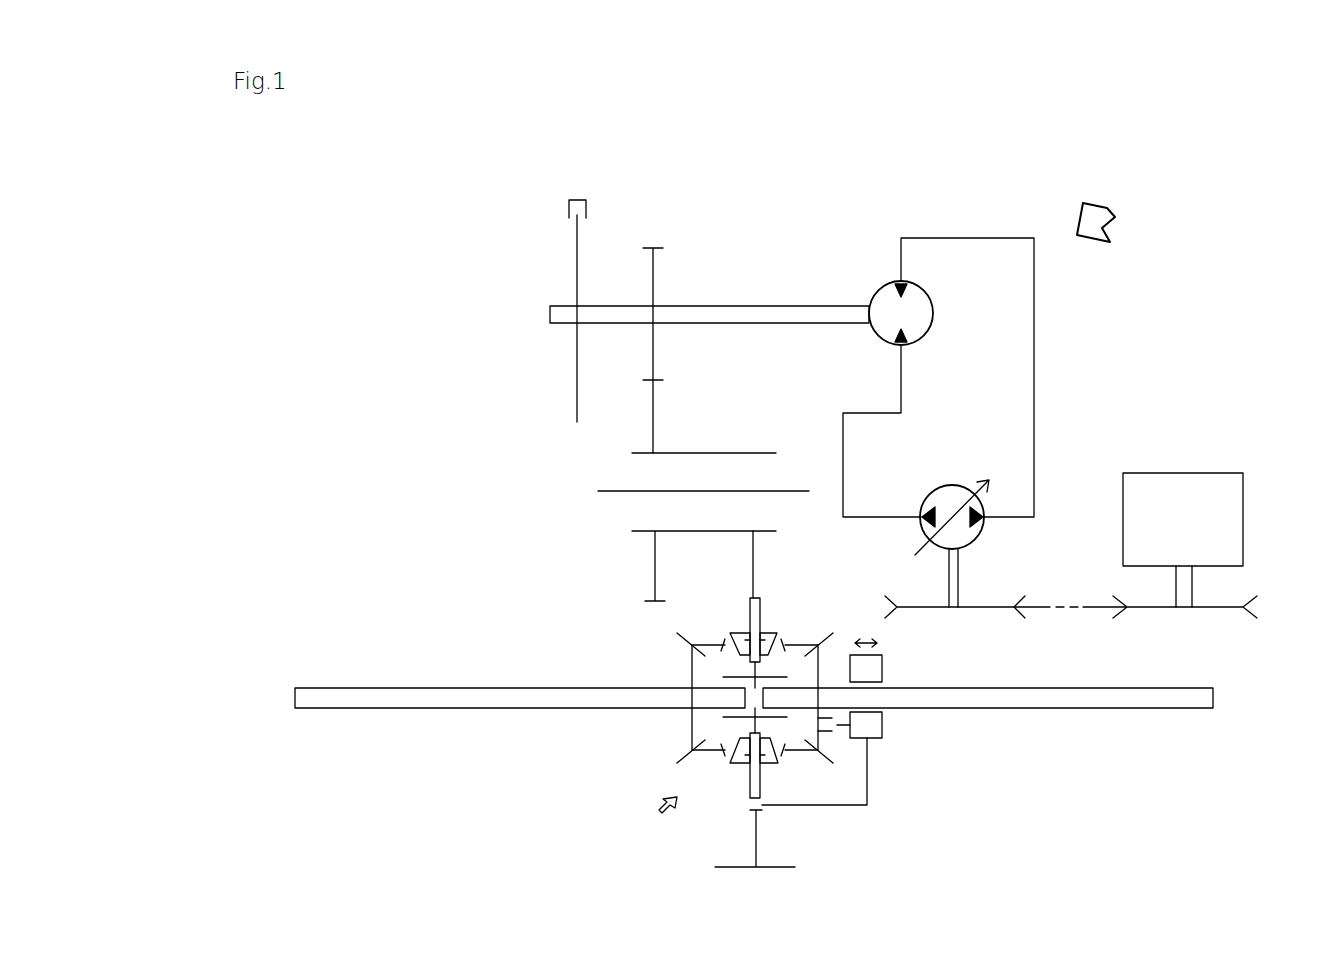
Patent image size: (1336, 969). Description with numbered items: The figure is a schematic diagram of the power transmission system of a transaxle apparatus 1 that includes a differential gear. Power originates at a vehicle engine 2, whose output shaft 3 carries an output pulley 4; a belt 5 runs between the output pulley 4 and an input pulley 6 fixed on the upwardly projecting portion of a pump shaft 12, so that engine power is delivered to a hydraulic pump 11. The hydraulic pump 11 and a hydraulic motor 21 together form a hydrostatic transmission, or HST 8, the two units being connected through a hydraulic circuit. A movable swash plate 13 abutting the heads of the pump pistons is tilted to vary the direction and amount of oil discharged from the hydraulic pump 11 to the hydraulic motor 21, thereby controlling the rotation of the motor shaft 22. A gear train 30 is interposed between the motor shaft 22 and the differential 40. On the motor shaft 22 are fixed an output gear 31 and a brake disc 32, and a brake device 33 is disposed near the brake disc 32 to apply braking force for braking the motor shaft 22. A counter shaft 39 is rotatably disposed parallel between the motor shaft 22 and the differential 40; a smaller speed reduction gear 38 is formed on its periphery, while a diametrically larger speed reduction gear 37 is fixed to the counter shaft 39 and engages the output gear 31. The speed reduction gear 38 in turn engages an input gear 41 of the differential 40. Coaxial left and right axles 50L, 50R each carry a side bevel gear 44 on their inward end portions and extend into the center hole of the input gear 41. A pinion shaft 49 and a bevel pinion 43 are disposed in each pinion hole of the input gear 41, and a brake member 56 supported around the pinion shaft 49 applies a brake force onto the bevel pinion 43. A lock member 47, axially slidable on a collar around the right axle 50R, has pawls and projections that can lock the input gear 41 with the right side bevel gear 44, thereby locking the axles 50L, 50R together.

The transaxle apparatus 1 is at (1108, 217).
The vehicle engine 2 is at (1190, 535).
The output shaft 3 is at (1185, 582).
The output pulley 4 is at (1212, 608).
The belt 5 is at (1070, 603).
The input pulley 6 is at (985, 605).
The hydrostatic transmission 8 is at (1061, 384).
The hydraulic pump 11 is at (925, 505).
The pump shaft 12 is at (948, 590).
The movable swash plate 13 is at (965, 490).
The hydraulic motor 21 is at (880, 284).
The motor shaft 22 is at (772, 312).
The gear train 30 is at (572, 472).
The output gear 31 is at (653, 277).
The brake disc 32 is at (577, 393).
The brake device 33 is at (609, 228).
The speed reduction gear 37 is at (652, 443).
The speed reduction gear 38 is at (748, 453).
The counter shaft 39 is at (627, 491).
The differential 40 is at (715, 756).
The input gear 41 is at (757, 835).
The bevel pinion 43 is at (718, 636).
The side bevel gear 44 is at (820, 657).
The lock member 47 is at (890, 737).
The pinion shaft 49 is at (755, 619).
The left axle 50L is at (357, 710).
The right axle 50R is at (1040, 709).
The brake member 56 is at (740, 640).